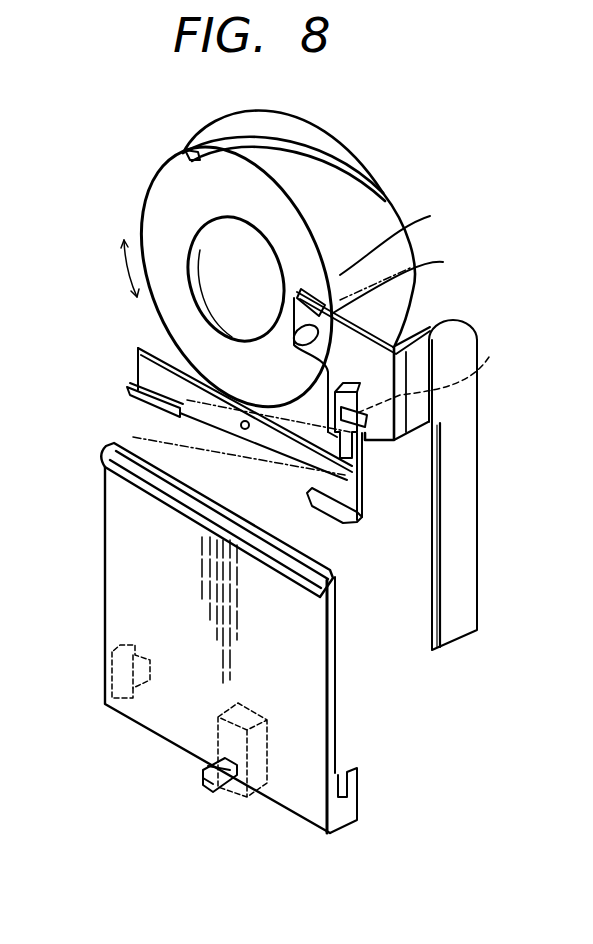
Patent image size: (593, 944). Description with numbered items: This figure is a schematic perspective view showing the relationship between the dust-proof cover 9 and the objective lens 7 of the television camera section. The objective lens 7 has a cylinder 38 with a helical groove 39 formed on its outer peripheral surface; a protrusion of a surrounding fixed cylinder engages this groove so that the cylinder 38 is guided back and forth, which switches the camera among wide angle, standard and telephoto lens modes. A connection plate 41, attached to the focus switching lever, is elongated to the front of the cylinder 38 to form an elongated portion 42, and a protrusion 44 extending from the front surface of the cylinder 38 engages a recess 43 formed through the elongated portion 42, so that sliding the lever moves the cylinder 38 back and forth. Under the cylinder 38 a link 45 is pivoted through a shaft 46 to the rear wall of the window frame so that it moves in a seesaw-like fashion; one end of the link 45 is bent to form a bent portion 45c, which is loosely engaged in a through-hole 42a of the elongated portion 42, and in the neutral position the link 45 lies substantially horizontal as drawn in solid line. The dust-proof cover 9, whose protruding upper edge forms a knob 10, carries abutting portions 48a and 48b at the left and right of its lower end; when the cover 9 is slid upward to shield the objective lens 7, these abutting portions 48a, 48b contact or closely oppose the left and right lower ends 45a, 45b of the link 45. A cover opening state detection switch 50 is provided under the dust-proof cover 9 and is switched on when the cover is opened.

The objective lens 7 is at (200, 240).
The dust-proof cover 9 is at (338, 683).
The knob 10 is at (140, 483).
The cylinder 38 is at (162, 172).
The helical groove 39 is at (345, 152).
The connection plate 41 is at (468, 436).
The elongated portion 42 is at (362, 325).
The through-hole 42a is at (360, 466).
The recess 43 is at (409, 275).
The protrusion 44 is at (384, 268).
The link 45 is at (148, 348).
The left lower end of link 45a is at (140, 402).
The right lower end of link 45b is at (338, 528).
The bent portion 45c is at (449, 380).
The shaft 46 is at (245, 430).
The abutting portion 48a is at (145, 698).
The abutting portion 48b is at (352, 768).
The cover opening state detection switch 50 is at (277, 786).